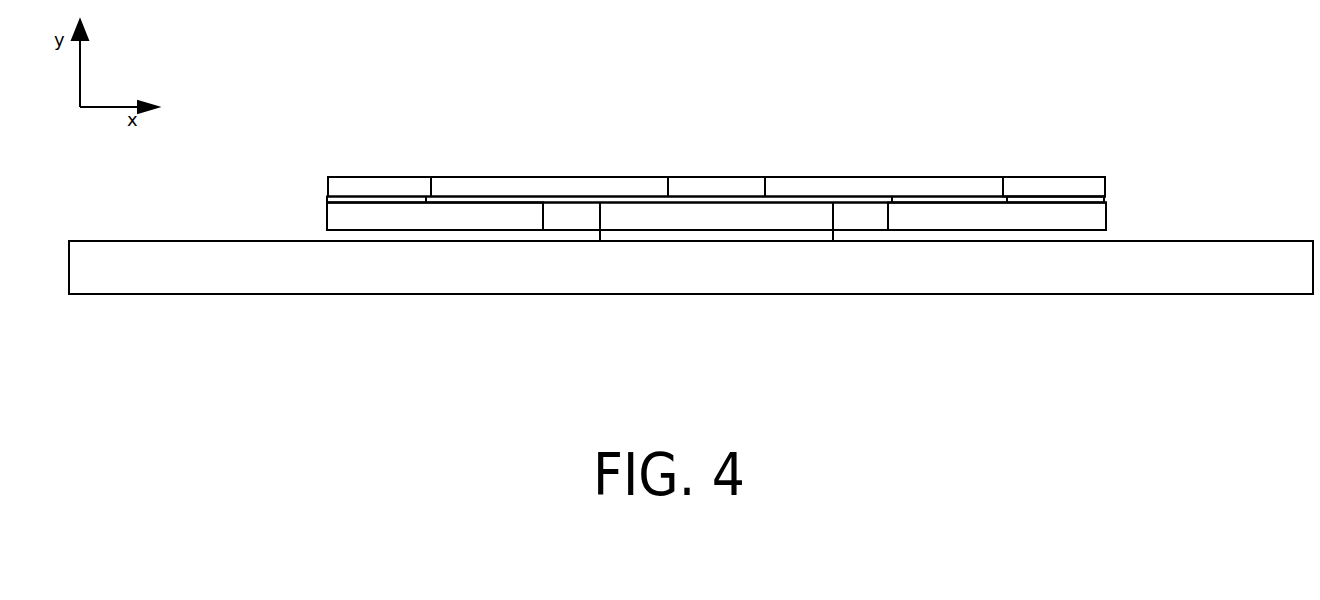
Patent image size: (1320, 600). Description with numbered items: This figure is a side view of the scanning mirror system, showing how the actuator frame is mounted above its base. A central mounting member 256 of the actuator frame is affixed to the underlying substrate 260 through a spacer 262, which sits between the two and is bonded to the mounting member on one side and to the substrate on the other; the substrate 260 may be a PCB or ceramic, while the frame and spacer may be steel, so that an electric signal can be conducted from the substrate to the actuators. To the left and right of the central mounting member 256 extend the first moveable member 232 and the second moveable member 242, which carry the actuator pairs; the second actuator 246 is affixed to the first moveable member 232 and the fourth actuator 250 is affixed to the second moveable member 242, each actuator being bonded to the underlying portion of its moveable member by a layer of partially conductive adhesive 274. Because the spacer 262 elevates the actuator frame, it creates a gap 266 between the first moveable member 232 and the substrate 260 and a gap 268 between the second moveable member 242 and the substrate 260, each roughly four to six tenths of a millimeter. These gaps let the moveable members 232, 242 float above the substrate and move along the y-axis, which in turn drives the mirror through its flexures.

The first moveable member 232 is at (1107, 220).
The second moveable member 242 is at (326, 215).
The second actuator 246 is at (1058, 177).
The fourth actuator 250 is at (387, 187).
The central mounting member 256 is at (728, 215).
The substrate 260 is at (784, 265).
The spacer 262 is at (698, 235).
The gap 266 is at (1134, 237).
The gap 268 is at (300, 233).
The partially conductive adhesive 274 is at (327, 200).